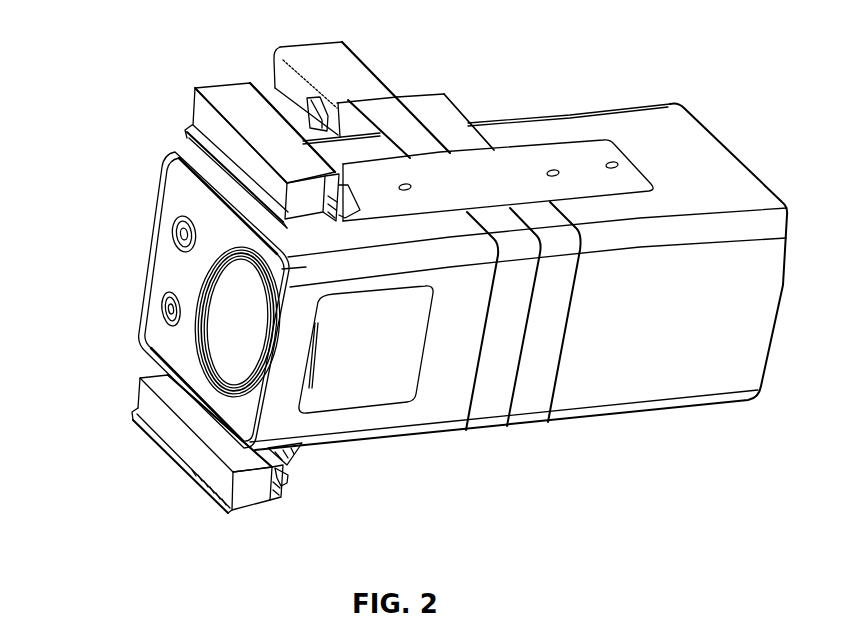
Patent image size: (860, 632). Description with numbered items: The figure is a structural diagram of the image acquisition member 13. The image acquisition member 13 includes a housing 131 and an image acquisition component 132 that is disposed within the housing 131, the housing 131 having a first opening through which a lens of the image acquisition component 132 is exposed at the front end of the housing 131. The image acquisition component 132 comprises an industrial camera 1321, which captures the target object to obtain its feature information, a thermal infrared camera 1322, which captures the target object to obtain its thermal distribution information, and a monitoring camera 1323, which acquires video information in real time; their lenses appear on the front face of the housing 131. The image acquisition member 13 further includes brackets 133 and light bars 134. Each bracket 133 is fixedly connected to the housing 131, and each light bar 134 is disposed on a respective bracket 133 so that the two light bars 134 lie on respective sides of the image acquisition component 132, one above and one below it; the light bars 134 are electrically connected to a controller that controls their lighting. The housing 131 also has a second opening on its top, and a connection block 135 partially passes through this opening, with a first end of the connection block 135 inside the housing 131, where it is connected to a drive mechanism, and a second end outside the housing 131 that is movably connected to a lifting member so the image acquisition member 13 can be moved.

The image acquisition member 13 is at (505, 84).
The housing 131 is at (686, 144).
The image acquisition component 132 is at (66, 195).
The industrial camera 1321 is at (213, 343).
The thermal infrared camera 1322 is at (173, 232).
The monitoring camera 1323 is at (161, 306).
The bracket 133 is at (213, 93).
The light bar 134 is at (200, 118).
The connection block 135 is at (353, 74).